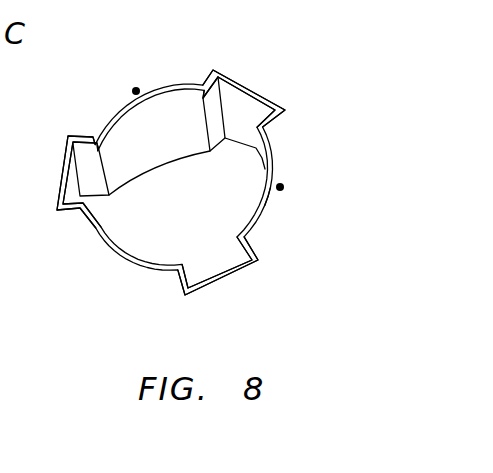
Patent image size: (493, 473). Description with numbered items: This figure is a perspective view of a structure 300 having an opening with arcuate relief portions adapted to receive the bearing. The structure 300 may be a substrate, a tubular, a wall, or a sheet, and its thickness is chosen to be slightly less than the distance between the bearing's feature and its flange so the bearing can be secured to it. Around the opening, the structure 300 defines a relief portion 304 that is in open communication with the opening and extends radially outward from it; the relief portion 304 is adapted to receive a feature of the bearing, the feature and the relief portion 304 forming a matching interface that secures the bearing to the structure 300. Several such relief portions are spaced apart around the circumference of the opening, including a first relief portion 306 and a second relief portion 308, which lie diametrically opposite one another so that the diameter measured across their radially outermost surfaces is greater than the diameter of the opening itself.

The structure 300 is at (306, 33).
The relief portion 304 is at (242, 280).
The first relief portion 306 is at (64, 181).
The second relief portion 308 is at (245, 71).